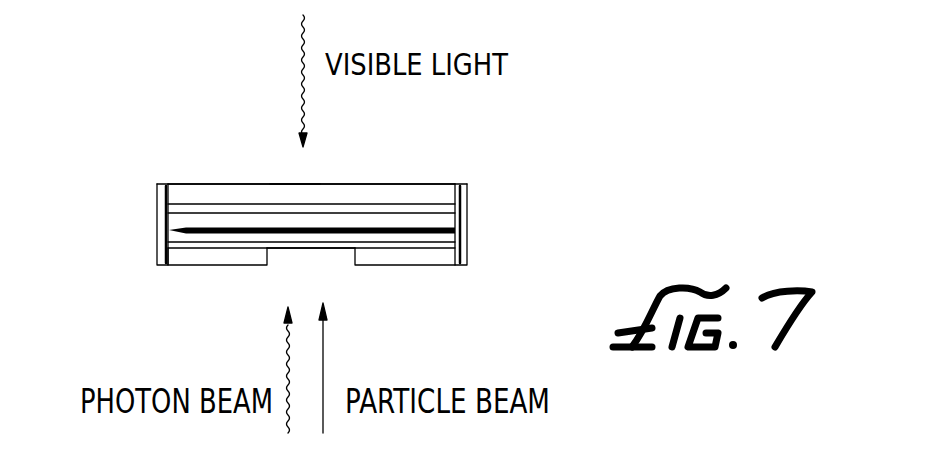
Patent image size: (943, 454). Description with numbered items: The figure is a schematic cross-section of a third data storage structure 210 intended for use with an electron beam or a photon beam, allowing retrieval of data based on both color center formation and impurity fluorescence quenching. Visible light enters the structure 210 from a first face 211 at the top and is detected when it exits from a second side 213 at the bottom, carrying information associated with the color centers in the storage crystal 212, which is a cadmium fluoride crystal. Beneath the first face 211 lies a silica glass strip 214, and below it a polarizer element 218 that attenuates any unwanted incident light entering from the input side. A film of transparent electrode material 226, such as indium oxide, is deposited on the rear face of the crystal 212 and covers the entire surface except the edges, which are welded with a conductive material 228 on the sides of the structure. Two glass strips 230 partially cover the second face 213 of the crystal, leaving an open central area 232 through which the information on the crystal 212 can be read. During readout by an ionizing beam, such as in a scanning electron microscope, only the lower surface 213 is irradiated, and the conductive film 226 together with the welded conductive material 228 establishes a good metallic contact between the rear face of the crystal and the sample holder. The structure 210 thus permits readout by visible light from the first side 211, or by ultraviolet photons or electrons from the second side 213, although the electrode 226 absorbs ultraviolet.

The structure 210 is at (436, 178).
The first face 211 is at (297, 183).
The storage crystal 212 is at (445, 237).
The second side 213 is at (335, 249).
The silica glass strip 214 is at (336, 195).
The polarizer element 218 is at (427, 222).
The transparent electrode material 226 is at (172, 229).
The conductive material 228 is at (165, 195).
The glass strips 230 is at (225, 255).
The open central area 232 is at (308, 265).